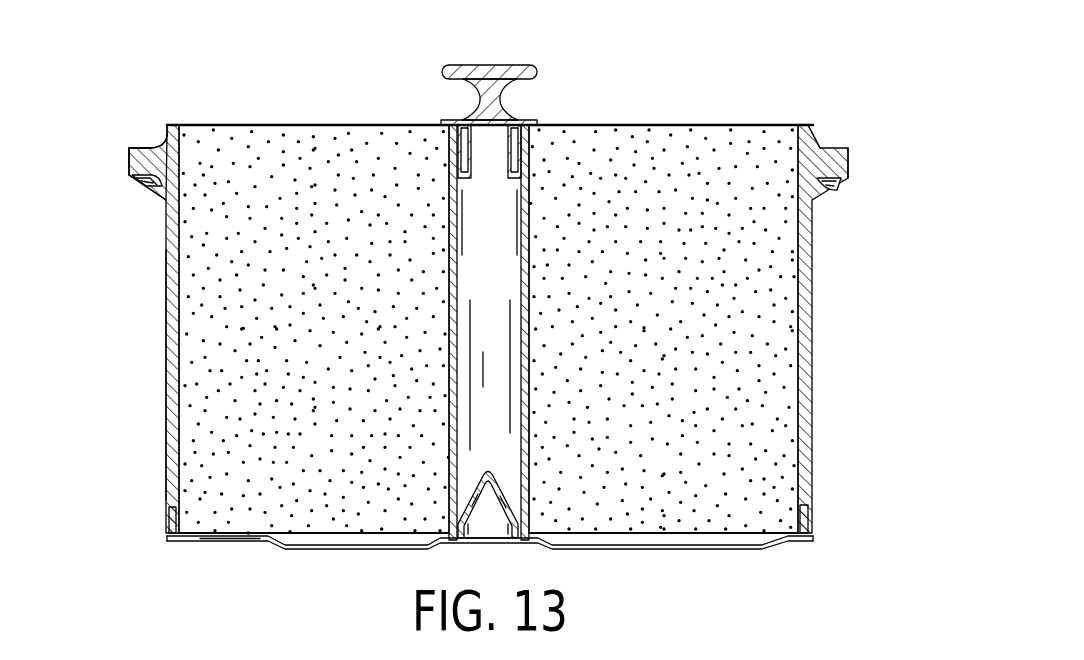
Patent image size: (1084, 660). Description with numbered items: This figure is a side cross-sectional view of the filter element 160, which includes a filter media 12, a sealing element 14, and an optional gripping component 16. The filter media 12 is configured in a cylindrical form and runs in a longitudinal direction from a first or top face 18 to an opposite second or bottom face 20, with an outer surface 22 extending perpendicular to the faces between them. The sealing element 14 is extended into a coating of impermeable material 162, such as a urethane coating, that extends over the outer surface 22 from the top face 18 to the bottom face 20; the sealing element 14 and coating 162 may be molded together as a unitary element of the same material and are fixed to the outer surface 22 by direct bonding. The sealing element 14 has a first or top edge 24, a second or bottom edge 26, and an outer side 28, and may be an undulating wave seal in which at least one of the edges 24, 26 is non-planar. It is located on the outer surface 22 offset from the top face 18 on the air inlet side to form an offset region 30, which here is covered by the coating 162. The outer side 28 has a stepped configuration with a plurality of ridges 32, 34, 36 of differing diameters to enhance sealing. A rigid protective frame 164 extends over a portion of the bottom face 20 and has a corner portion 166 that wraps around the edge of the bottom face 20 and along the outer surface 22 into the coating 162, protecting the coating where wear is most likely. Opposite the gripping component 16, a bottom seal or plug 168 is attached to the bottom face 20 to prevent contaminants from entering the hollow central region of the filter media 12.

The filter media 12 is at (268, 101).
The sealing element 14 is at (100, 156).
The gripping component 16 is at (498, 72).
The first or top face 18 is at (349, 125).
The second or bottom face 20 is at (490, 569).
The outer surface 22 is at (126, 329).
The first or top edge 24 is at (140, 148).
The second or bottom edge 26 is at (158, 187).
The outer side 28 is at (129, 164).
The offset region 30 is at (164, 135).
The ridge 32 is at (838, 181).
The ridge 34 is at (850, 165).
The ridge 36 is at (848, 150).
The filter element 160 is at (818, 277).
The coating of impermeable material 162 is at (166, 363).
The protective frame 164 is at (250, 542).
The corner portion 166 is at (173, 541).
The bottom seal or plug 168 is at (489, 546).